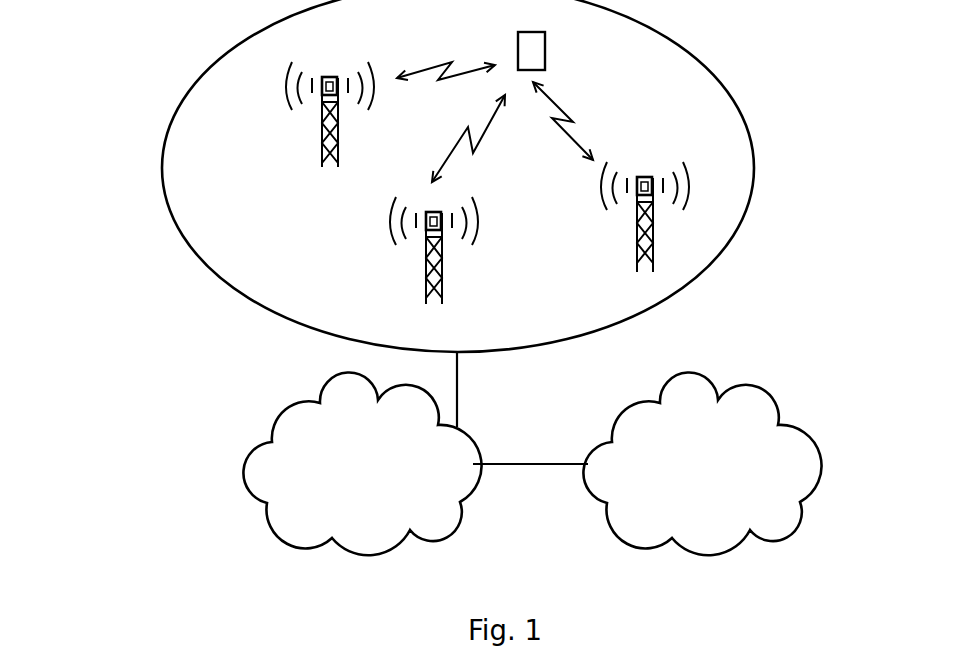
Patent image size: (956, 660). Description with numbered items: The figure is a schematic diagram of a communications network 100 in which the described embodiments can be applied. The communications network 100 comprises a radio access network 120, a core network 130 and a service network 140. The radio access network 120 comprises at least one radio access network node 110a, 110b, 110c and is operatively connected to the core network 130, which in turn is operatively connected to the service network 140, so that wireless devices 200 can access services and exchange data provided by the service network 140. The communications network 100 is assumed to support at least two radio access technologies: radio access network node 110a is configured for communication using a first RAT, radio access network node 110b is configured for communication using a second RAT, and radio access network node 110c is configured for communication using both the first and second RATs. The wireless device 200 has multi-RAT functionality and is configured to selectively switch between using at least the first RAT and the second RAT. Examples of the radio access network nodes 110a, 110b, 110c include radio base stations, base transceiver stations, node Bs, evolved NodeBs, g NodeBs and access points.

The communications network 100 is at (148, 48).
The radio access network node 110a is at (322, 150).
The radio access network node 110b is at (426, 288).
The radio access network node 110c is at (637, 254).
The radio access network 120 is at (226, 285).
The core network 130 is at (377, 478).
The service network 140 is at (728, 481).
The wireless device 200 is at (545, 45).